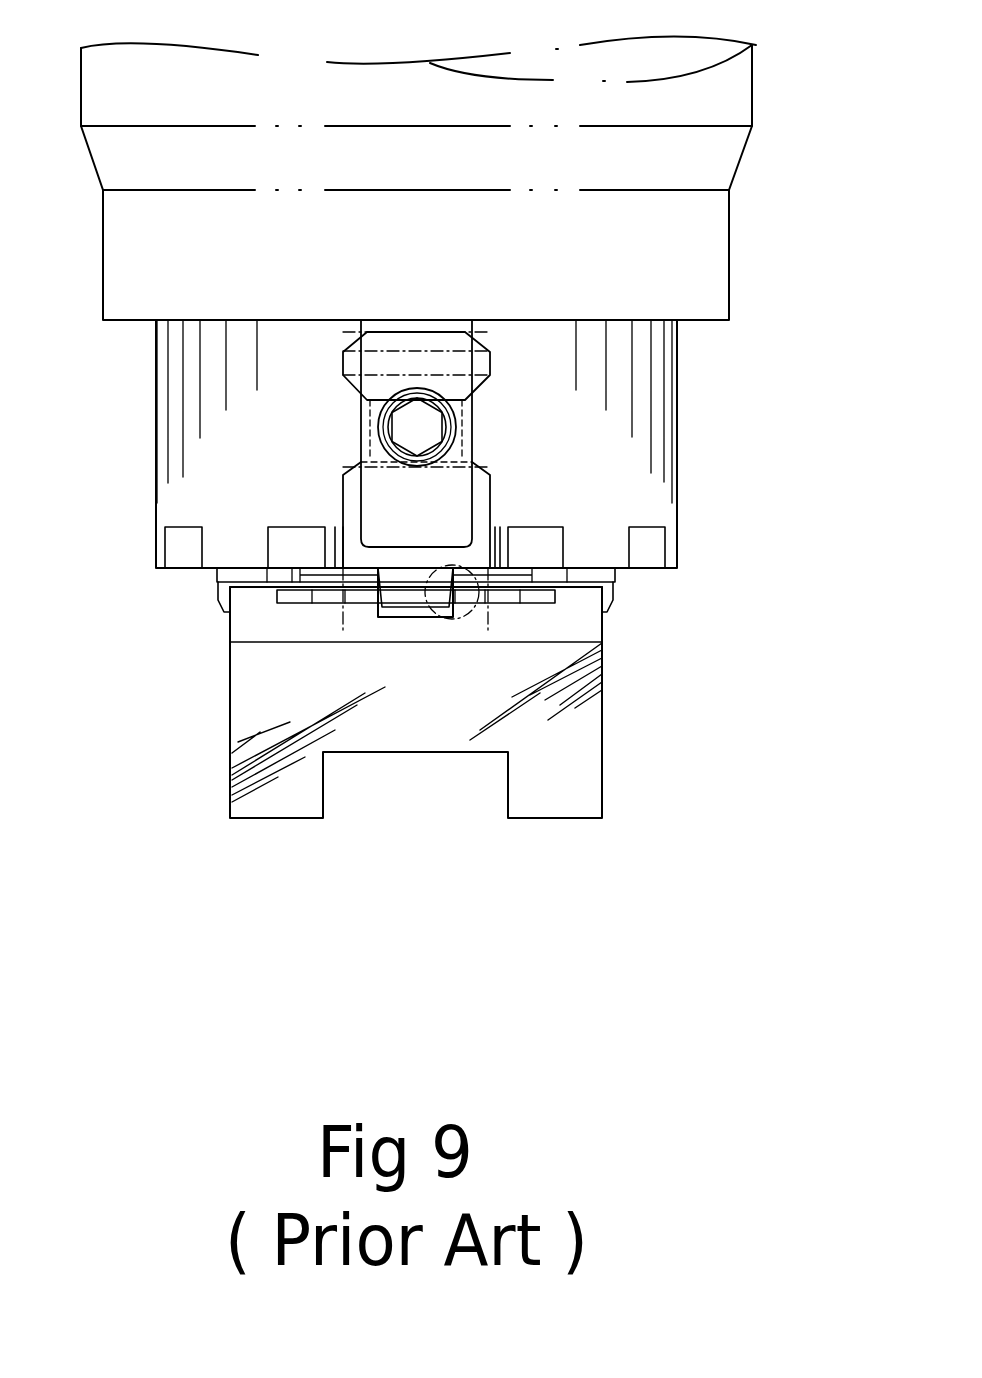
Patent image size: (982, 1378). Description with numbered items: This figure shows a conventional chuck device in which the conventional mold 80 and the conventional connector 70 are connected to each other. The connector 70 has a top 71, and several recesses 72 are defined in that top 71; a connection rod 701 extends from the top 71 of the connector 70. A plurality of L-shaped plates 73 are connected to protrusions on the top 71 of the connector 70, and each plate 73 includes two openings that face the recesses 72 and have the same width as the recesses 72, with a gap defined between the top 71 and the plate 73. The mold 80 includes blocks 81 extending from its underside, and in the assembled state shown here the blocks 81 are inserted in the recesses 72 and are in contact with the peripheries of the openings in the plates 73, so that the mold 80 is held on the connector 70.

The connector 70 is at (573, 753).
The connection rod 701 is at (487, 483).
The top 71 is at (257, 632).
The recesses 72 is at (447, 613).
The L-shaped plates 73 is at (278, 585).
The mold 80 is at (623, 455).
The blocks 81 is at (405, 597).